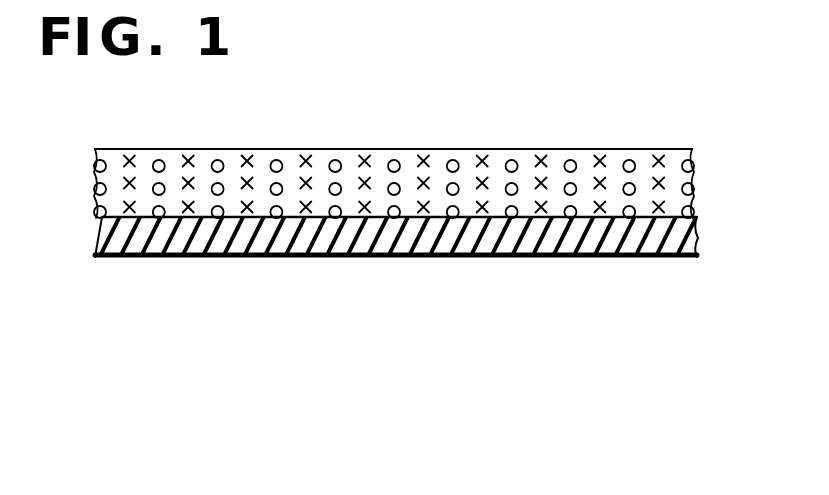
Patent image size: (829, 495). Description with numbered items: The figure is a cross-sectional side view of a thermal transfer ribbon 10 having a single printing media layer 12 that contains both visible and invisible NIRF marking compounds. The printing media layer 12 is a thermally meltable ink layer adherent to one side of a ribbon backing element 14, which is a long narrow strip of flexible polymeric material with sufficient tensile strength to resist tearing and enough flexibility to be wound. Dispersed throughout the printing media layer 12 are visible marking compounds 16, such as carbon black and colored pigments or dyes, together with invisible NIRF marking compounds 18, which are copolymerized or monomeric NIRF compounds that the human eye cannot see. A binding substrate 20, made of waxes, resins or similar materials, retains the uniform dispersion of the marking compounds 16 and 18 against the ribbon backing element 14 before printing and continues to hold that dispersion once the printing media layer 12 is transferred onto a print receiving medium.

The thermal transfer ribbon 10 is at (563, 103).
The printing media layer 12 is at (713, 145).
The ribbon backing element 14 is at (392, 243).
The visible marking compounds 16 is at (307, 156).
The invisible NIRF marking compounds 18 is at (507, 163).
The binding substrate 20 is at (612, 165).